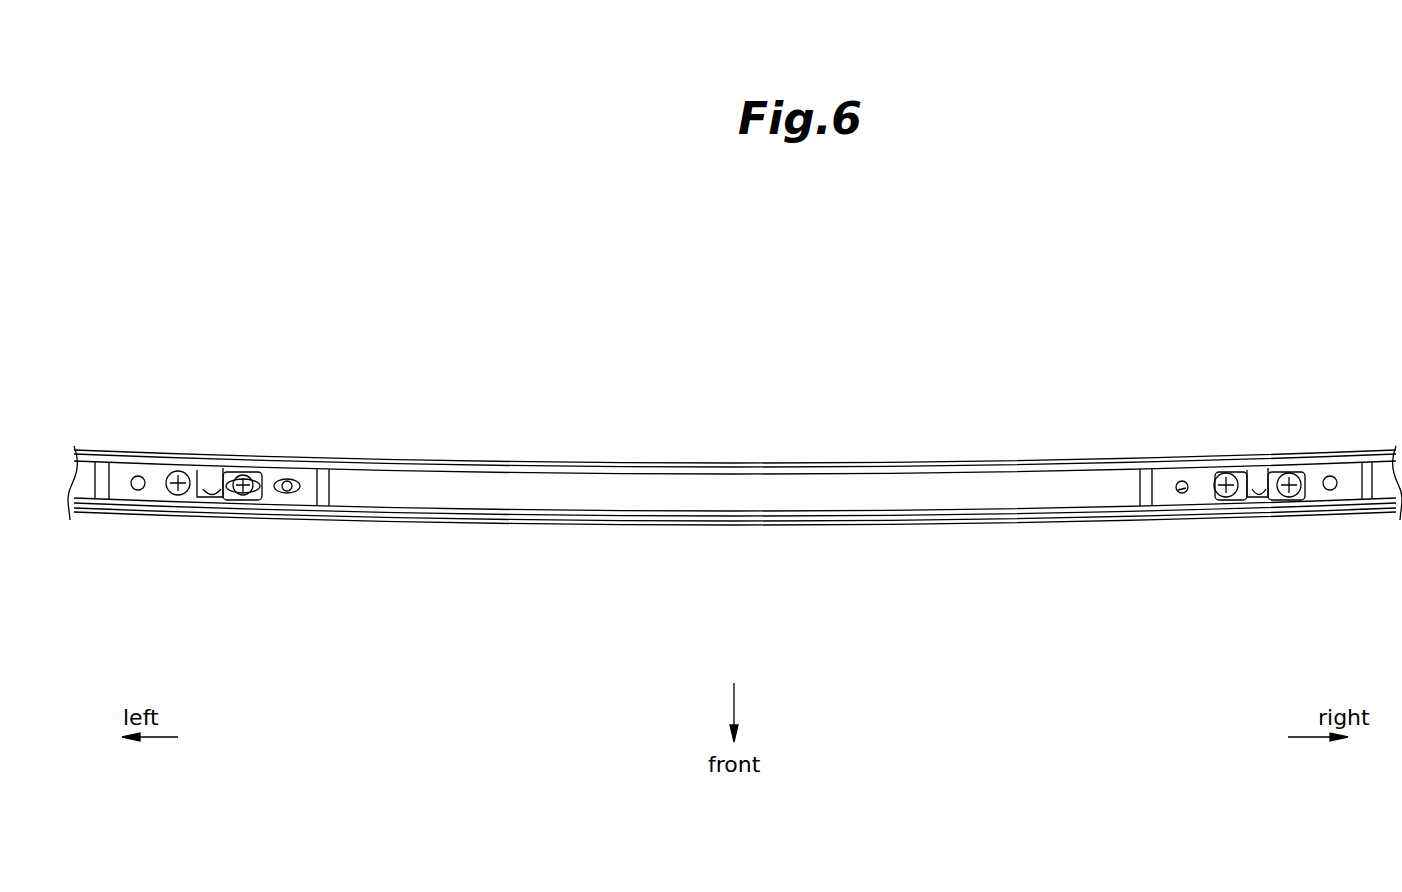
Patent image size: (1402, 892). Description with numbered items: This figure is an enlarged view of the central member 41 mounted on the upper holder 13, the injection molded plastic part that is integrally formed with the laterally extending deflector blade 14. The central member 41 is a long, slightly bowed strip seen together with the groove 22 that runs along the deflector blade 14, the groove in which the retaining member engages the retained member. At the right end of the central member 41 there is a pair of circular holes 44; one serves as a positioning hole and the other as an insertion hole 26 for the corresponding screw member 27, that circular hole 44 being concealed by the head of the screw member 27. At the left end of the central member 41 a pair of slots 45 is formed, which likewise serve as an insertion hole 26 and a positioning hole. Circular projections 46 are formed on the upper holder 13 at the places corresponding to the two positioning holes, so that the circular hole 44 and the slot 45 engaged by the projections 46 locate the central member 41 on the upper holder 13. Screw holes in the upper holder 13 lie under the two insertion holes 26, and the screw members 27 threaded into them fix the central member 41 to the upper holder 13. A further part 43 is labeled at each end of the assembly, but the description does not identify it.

The upper holder 13 is at (418, 460).
The deflector blade 14 is at (842, 472).
The groove 22 is at (218, 487).
The insertion hole 26 is at (257, 491).
The screw member 27 is at (178, 496).
The central member 41 is at (673, 500).
The end portion of bumper beam 43 is at (83, 490).
The circular hole 44 is at (1182, 494).
The slot 45 is at (292, 480).
The circular projection 46 is at (137, 476).